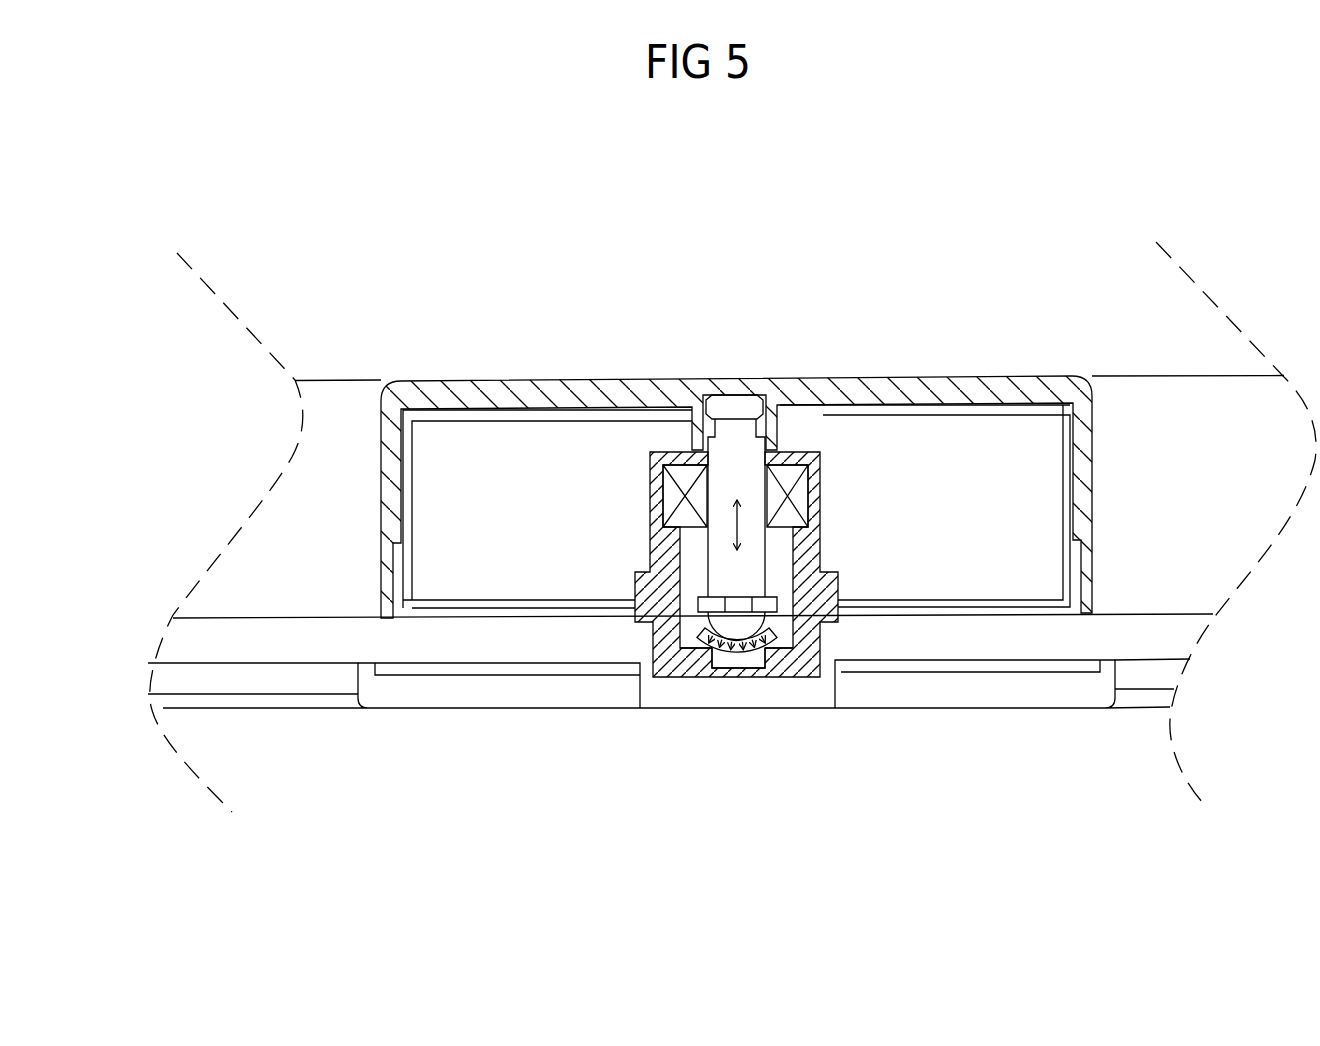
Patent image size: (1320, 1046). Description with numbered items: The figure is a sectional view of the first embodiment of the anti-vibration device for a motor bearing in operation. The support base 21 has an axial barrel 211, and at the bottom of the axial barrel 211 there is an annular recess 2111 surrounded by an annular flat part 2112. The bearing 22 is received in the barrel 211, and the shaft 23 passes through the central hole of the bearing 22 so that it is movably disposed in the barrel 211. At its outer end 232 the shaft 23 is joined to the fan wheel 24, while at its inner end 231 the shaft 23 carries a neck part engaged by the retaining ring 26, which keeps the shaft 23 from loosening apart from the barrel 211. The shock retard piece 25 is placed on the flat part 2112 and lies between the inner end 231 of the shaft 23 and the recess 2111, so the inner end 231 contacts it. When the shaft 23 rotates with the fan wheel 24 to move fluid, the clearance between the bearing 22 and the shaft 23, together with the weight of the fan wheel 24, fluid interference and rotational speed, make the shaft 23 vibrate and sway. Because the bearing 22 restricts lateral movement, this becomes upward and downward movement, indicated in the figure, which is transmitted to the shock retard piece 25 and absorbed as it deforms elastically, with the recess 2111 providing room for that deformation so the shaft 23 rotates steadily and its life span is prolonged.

The support base 21 is at (918, 692).
The axial barrel 211 is at (657, 463).
The annular recess 2111 is at (718, 662).
The annular flat part 2112 is at (693, 640).
The bearing 22 is at (797, 488).
The shaft 23 is at (800, 561).
The inner end of the shaft 231 is at (748, 628).
The outer end of the shaft 232 is at (745, 408).
The fan wheel 24 is at (651, 380).
The shock retard piece 25 is at (770, 640).
The retaining ring 26 is at (716, 603).